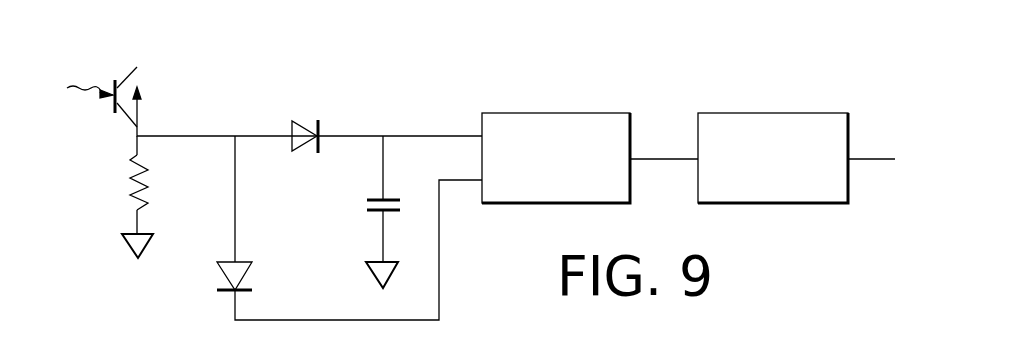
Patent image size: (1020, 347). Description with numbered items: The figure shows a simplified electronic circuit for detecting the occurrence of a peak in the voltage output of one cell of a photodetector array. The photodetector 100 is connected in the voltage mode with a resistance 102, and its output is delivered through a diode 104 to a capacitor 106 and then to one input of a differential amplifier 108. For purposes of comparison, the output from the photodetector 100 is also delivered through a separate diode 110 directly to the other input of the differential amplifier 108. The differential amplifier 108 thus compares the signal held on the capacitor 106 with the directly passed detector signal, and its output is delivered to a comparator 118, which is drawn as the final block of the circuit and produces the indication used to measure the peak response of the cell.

The photodetector 100 is at (138, 84).
The resistance 102 is at (132, 183).
The diode 104 is at (303, 122).
The capacitor 106 is at (368, 203).
The differential amplifier 108 is at (555, 112).
The diode 110 is at (243, 272).
The comparator 118 is at (848, 133).